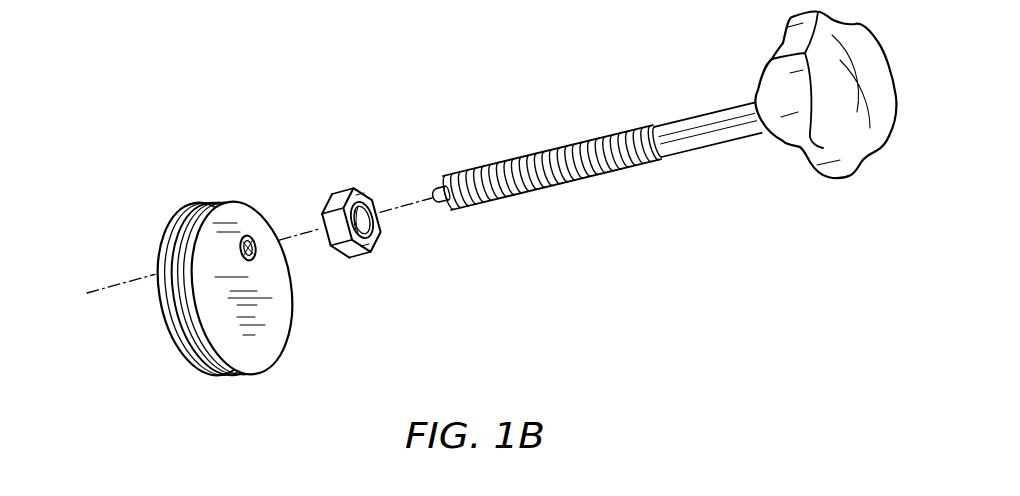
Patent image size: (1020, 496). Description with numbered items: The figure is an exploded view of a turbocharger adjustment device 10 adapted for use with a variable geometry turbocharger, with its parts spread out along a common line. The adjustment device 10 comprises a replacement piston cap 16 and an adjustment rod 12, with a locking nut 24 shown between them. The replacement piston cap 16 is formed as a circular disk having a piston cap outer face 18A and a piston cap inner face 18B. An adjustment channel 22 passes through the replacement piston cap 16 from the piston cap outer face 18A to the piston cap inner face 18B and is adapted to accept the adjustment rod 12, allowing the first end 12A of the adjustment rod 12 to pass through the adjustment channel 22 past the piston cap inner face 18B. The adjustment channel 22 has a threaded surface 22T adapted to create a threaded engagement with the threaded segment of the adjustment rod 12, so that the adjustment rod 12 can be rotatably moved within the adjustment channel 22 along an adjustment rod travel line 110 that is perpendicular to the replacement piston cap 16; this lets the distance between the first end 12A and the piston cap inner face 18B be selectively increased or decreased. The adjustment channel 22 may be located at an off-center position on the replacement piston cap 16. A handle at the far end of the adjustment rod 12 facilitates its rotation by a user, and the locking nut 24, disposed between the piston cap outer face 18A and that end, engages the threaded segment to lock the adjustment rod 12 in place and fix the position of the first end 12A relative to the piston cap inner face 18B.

The turbocharger adjustment device 10 is at (663, 203).
The adjustment rod 12 is at (687, 110).
The first end 12A is at (433, 190).
The replacement piston cap 16 is at (250, 371).
The piston cap outer face 18A is at (277, 317).
The piston cap inner face 18B is at (180, 345).
The adjustment channel 22 is at (249, 237).
The threaded surface 22T is at (257, 254).
The locking nut 24 is at (337, 196).
The adjustment rod travel line 110 is at (120, 284).